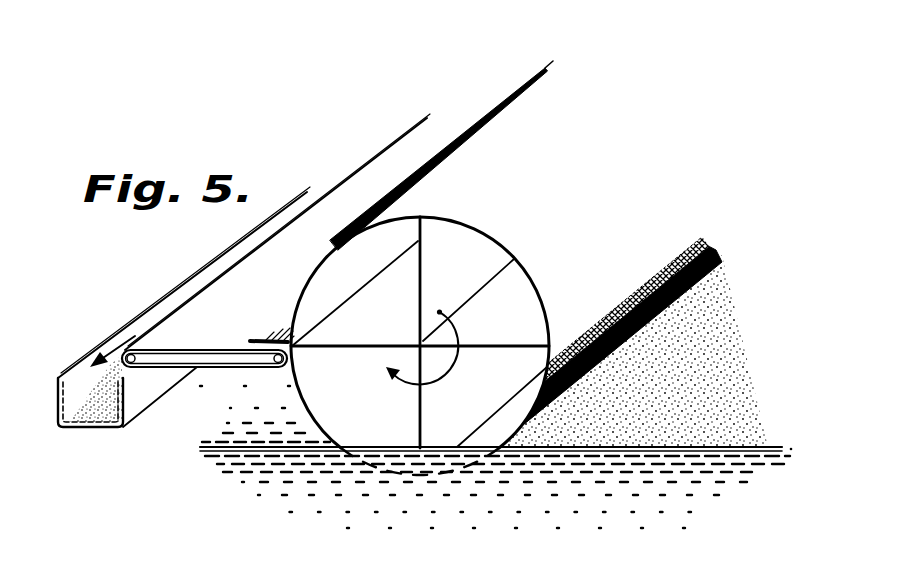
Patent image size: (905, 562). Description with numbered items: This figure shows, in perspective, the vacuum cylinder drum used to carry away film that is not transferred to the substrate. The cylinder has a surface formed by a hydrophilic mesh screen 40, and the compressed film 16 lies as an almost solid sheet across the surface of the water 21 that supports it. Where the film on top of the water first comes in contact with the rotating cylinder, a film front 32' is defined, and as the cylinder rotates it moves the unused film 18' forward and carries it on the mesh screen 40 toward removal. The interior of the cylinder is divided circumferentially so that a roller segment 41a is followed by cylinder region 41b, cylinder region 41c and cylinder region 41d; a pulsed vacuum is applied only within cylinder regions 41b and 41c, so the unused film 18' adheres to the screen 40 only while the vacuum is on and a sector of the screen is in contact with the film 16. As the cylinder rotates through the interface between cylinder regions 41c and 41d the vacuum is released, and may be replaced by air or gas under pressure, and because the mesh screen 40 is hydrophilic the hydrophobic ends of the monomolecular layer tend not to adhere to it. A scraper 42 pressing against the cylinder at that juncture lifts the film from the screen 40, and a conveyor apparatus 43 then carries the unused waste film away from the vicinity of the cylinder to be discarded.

The film 16 is at (665, 438).
The unused film 18' is at (234, 405).
The water 21 is at (748, 446).
The film front 32' is at (621, 380).
The hydrophilic mesh screen 40 is at (450, 205).
The roller segment 41a is at (477, 275).
The cylinder region 41b is at (463, 406).
The cylinder region 41c is at (372, 404).
The cylinder region 41d is at (360, 277).
The scraper 42 is at (253, 339).
The conveyor apparatus 43 is at (153, 350).